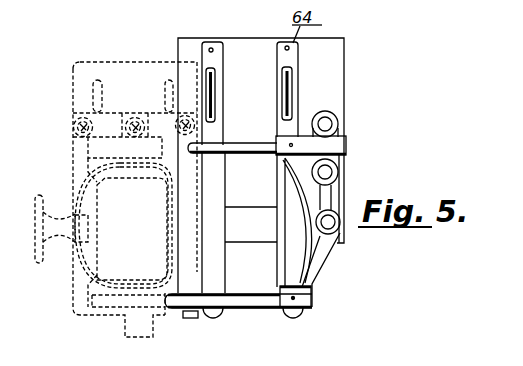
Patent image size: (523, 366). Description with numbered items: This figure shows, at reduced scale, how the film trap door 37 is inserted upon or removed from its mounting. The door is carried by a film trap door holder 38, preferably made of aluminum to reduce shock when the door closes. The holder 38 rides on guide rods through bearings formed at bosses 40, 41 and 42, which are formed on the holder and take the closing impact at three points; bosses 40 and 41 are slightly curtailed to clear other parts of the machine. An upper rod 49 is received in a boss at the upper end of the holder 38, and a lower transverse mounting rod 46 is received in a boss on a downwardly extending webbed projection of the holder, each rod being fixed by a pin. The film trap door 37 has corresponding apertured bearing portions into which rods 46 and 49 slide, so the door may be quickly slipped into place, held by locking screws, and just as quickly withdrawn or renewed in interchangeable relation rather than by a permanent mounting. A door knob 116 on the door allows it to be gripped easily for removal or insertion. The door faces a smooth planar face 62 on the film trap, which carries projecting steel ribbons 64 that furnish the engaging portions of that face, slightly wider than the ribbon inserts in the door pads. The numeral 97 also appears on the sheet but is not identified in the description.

The film trap door 37 is at (75, 85).
The door knob 116 is at (55, 188).
The planar face 62 is at (337, 62).
The ribbons 64 is at (238, 25).
The upper rod 49 is at (263, 133).
The boss 40 is at (393, 130).
The boss 41 is at (390, 175).
The boss 42 is at (345, 232).
The film trap door holder 38 is at (303, 250).
The lower transverse mounting rod 46 is at (262, 315).
The member 97 is at (500, 2).